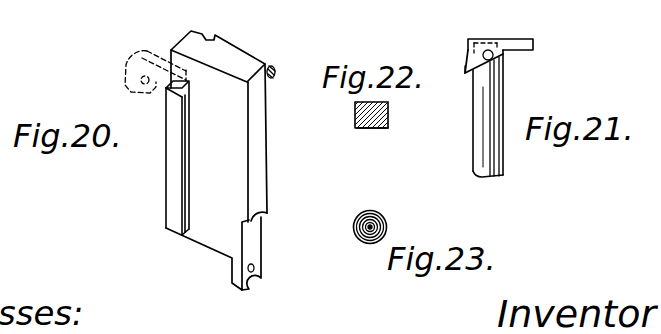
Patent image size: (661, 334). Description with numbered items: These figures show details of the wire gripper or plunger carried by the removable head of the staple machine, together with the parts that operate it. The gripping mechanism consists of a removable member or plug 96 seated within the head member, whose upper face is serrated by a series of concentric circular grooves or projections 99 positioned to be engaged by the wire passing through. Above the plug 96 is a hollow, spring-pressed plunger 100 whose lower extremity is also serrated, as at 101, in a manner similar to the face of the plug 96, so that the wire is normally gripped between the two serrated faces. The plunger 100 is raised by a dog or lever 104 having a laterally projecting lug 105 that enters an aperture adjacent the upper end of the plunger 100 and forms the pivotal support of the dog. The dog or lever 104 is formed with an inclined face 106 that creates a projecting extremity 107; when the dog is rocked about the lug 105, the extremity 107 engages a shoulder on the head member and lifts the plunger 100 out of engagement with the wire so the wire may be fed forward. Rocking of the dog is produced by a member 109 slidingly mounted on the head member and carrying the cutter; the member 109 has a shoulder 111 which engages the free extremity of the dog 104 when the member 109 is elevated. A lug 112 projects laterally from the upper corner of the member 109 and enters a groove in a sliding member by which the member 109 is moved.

In FIG. 23, the removable member or plug 96 is at (385, 223).
In FIG. 23, the concentric circular grooves or projections 99 is at (367, 213).
In FIG. 21, the plunger 100 is at (498, 102).
In FIG. 22, the plunger 100 is at (388, 113).
In FIG. 22, the serrated face 101 is at (385, 130).
In FIG. 20, the dog or lever 104 is at (147, 51).
In FIG. 21, the dog or lever 104 is at (498, 40).
In FIG. 20, the laterally projecting lug 105 is at (125, 82).
In FIG. 21, the laterally projecting lug 105 is at (487, 50).
In FIG. 20, the inclined face 106 is at (146, 85).
In FIG. 21, the inclined face 106 is at (471, 66).
In FIG. 21, the projecting extremity 107 is at (468, 77).
In FIG. 20, the member 109 is at (262, 172).
In FIG. 20, the shoulder 111 is at (170, 101).
In FIG. 20, the lug 112 is at (276, 70).